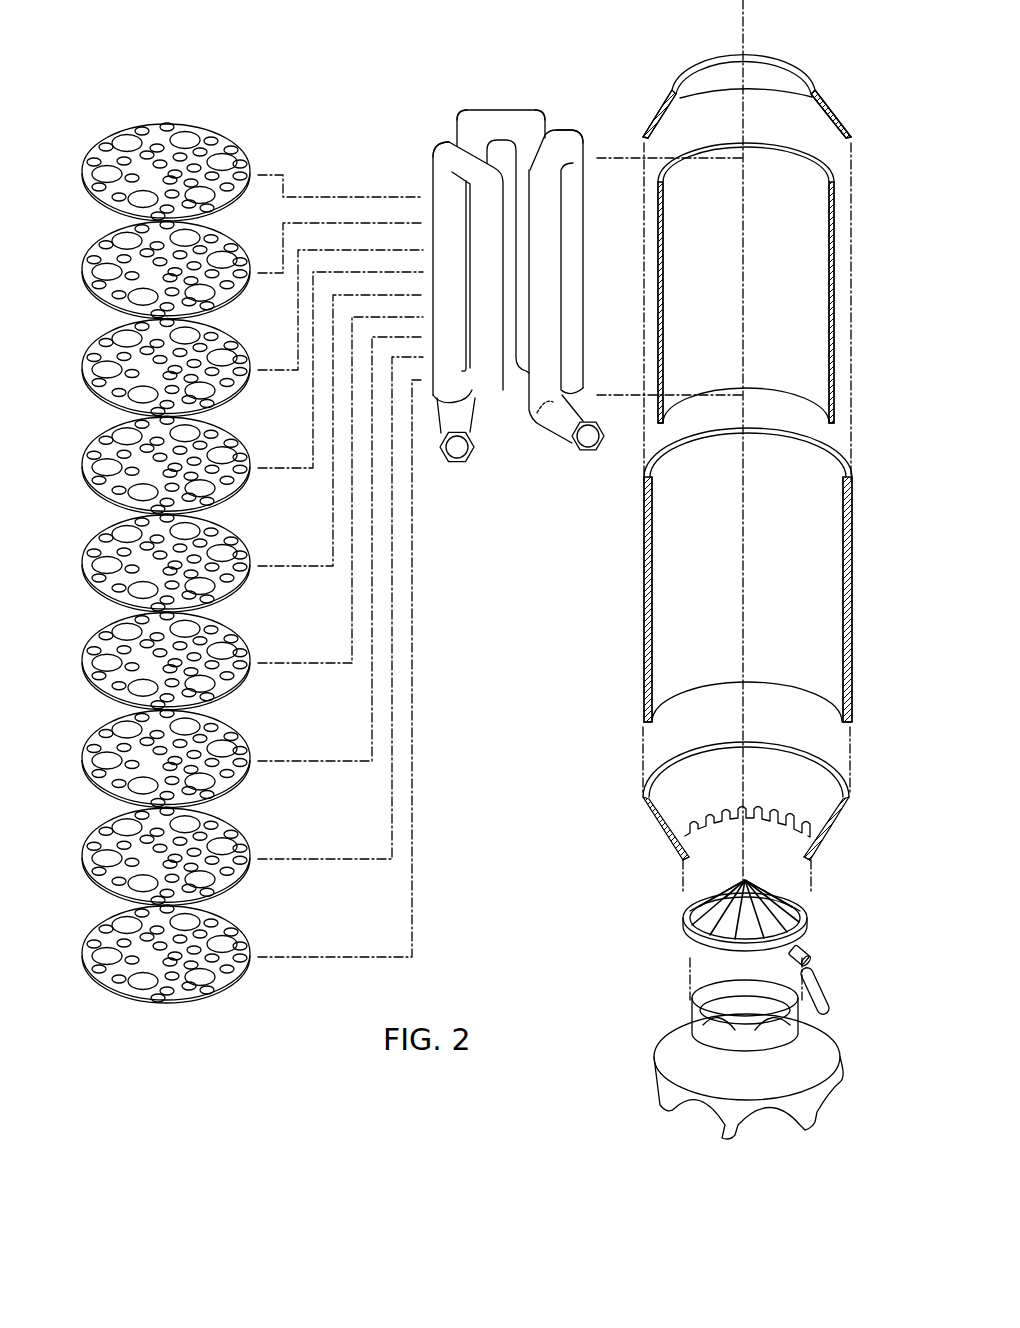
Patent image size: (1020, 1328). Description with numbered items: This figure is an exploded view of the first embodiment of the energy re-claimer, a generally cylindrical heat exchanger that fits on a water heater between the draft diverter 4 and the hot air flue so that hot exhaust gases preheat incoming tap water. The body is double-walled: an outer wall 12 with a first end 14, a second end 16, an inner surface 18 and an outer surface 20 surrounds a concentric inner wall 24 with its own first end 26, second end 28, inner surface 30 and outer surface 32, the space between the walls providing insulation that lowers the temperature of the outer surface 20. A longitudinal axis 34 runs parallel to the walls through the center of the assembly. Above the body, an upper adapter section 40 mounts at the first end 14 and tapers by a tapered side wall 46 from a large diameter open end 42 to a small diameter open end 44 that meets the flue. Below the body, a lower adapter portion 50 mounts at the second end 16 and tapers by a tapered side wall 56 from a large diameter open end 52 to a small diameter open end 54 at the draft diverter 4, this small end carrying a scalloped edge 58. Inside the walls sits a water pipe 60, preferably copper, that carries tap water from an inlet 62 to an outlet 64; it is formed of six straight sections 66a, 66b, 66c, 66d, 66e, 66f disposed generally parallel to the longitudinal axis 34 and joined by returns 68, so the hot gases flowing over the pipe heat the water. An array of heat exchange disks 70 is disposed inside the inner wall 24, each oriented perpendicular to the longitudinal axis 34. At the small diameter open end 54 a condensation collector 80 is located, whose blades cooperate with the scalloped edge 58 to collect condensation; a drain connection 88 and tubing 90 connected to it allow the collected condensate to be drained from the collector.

The draft diverter 4 is at (665, 1038).
The outer wall 12 is at (737, 596).
The first end 14 is at (645, 476).
The second end 16 is at (654, 724).
The inner surface 18 is at (820, 482).
The outer surface 20 is at (852, 686).
The inner wall 24 is at (776, 283).
The first end 26 is at (825, 167).
The second end 28 is at (805, 397).
The inner surface 30 is at (817, 235).
The outer surface 32 is at (835, 277).
The longitudinal axis 34 is at (745, 17).
The upper adapter section 40 is at (759, 81).
The large diameter open end 42 is at (717, 92).
The small diameter open end 44 is at (782, 55).
The tapered side wall 46 is at (835, 107).
The lower adapter portion 50 is at (730, 813).
The large diameter open end 52 is at (650, 786).
The small diameter open end 54 is at (682, 857).
The tapered side wall 56 is at (653, 823).
The scalloped edge 58 is at (695, 832).
The water pipe 60 is at (502, 287).
The inlet 62 is at (586, 454).
The outlet 64 is at (462, 463).
The straight section 66a is at (553, 305).
The straight section 66b is at (577, 245).
The straight section 66c is at (533, 142).
The straight section 66d is at (463, 135).
The straight section 66e is at (435, 396).
The straight section 66f is at (499, 390).
The return 68 is at (467, 122).
The heat exchange disk 70 is at (88, 188).
The condensation collector 80 is at (774, 948).
The drain connection 88 is at (807, 952).
The tubing 90 is at (822, 990).